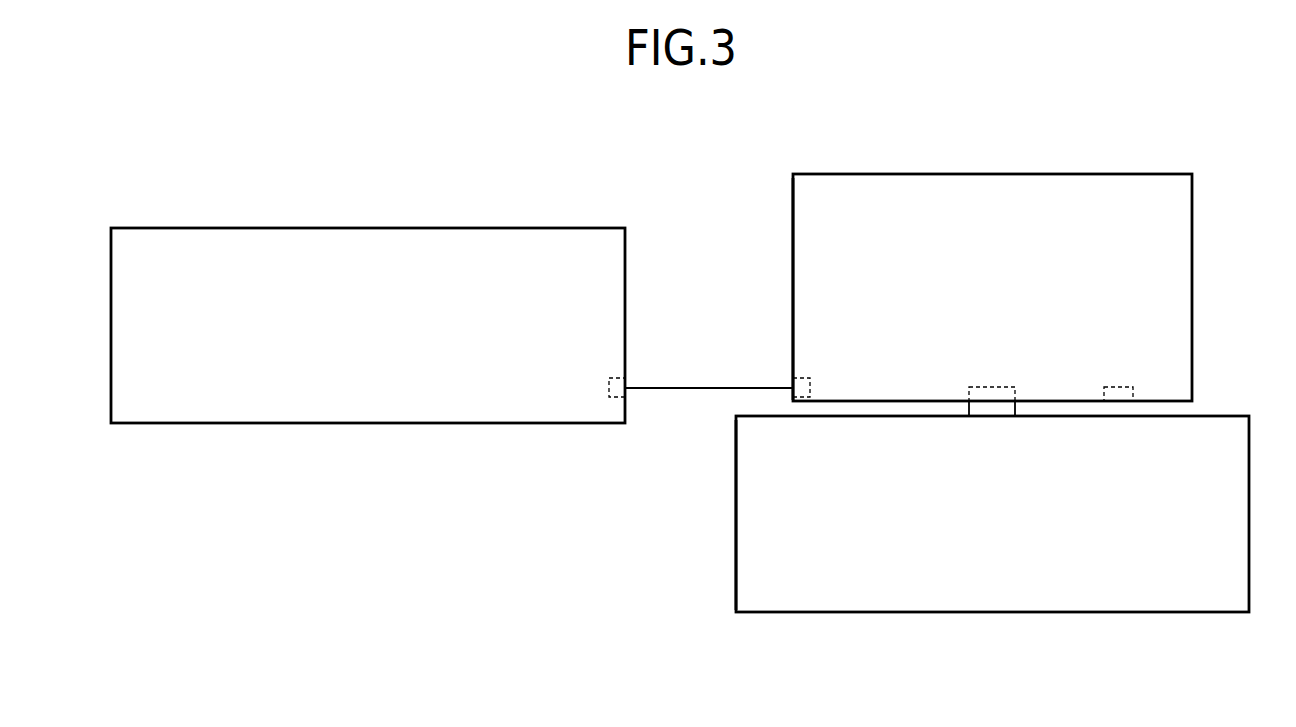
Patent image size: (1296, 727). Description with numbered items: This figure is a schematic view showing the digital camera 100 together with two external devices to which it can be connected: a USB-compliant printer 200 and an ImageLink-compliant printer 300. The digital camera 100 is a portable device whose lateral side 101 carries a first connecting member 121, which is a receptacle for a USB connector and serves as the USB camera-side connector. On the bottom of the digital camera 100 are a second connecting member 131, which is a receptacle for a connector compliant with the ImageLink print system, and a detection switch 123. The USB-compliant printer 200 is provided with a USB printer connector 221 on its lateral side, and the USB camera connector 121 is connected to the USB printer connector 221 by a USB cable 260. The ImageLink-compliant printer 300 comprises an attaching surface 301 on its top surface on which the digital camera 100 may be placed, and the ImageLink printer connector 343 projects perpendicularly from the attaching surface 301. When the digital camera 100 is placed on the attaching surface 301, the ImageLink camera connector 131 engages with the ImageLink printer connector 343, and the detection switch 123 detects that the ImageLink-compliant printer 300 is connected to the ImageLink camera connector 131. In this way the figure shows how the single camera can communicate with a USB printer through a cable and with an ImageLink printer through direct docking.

The digital camera 100 is at (1142, 172).
The lateral side 101 is at (793, 202).
The first connecting member 121 is at (793, 383).
The detection switch 123 is at (1118, 402).
The second connecting member 131 is at (1007, 411).
The USB-compliant printer 200 is at (353, 428).
The USB printer connector 221 is at (626, 391).
The USB cable 260 is at (683, 388).
The ImageLink-compliant printer 300 is at (986, 616).
The attaching surface 301 is at (760, 416).
The ImageLink printer connector 343 is at (989, 407).